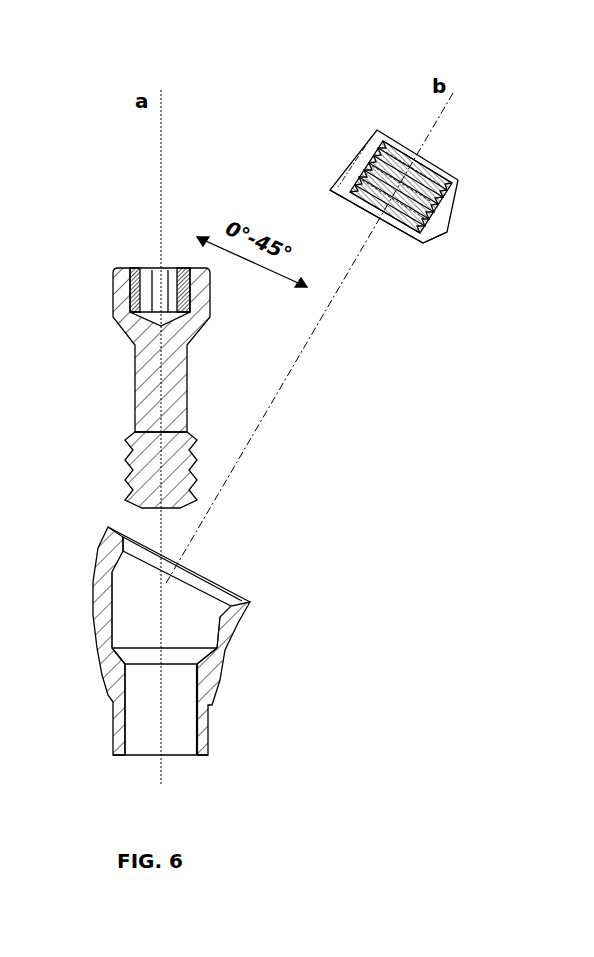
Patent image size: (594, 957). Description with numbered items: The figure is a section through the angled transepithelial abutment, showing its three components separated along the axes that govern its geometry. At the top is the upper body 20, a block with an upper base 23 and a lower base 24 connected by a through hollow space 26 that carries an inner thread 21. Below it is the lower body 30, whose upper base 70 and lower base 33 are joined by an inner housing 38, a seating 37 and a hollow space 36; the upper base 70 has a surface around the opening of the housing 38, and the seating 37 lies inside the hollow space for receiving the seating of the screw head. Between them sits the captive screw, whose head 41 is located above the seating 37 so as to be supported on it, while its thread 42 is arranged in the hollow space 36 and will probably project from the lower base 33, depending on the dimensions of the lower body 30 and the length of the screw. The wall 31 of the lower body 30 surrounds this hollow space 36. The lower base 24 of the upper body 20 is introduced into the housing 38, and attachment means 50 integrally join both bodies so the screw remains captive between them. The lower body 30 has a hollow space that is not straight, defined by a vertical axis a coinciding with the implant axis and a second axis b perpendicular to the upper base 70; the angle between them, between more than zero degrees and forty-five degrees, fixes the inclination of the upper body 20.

The upper body 20 is at (277, 193).
The inner thread 21 is at (432, 168).
The upper base 23 is at (458, 180).
The lower base 24 is at (423, 246).
The through hollow space 26 is at (417, 200).
The attachment means 50 is at (232, 604).
The lower body 30 is at (260, 520).
The abutment wall 31 is at (200, 728).
The lower base 33 is at (182, 748).
The hollow space 36 is at (168, 692).
The seating 37 is at (193, 658).
The inner housing 38 is at (193, 622).
The head of the screw 41 is at (123, 297).
The thread of the screw 42 is at (135, 468).
The upper base 70 is at (243, 599).